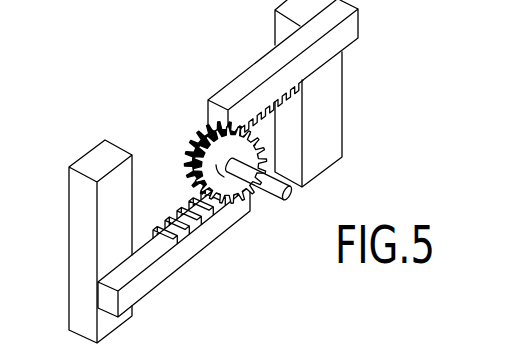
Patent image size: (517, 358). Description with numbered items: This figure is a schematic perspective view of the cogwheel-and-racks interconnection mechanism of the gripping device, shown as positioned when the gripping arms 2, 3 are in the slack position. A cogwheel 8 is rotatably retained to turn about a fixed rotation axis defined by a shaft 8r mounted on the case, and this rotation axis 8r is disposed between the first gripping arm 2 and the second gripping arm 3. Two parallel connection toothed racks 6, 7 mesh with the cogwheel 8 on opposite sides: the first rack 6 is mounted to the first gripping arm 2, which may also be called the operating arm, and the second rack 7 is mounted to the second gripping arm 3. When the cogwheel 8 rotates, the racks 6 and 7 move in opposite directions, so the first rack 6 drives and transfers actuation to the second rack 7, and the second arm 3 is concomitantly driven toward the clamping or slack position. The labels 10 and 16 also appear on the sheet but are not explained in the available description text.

The first gripping arm 2 is at (330, 118).
The second gripping arm 3 is at (102, 160).
The first rack 6 is at (340, 35).
The second rack 7 is at (185, 250).
The cogwheel 8 is at (207, 142).
The shaft 8r is at (268, 184).
The housing 10 is at (152, 179).
The housing part 16 is at (256, 5).